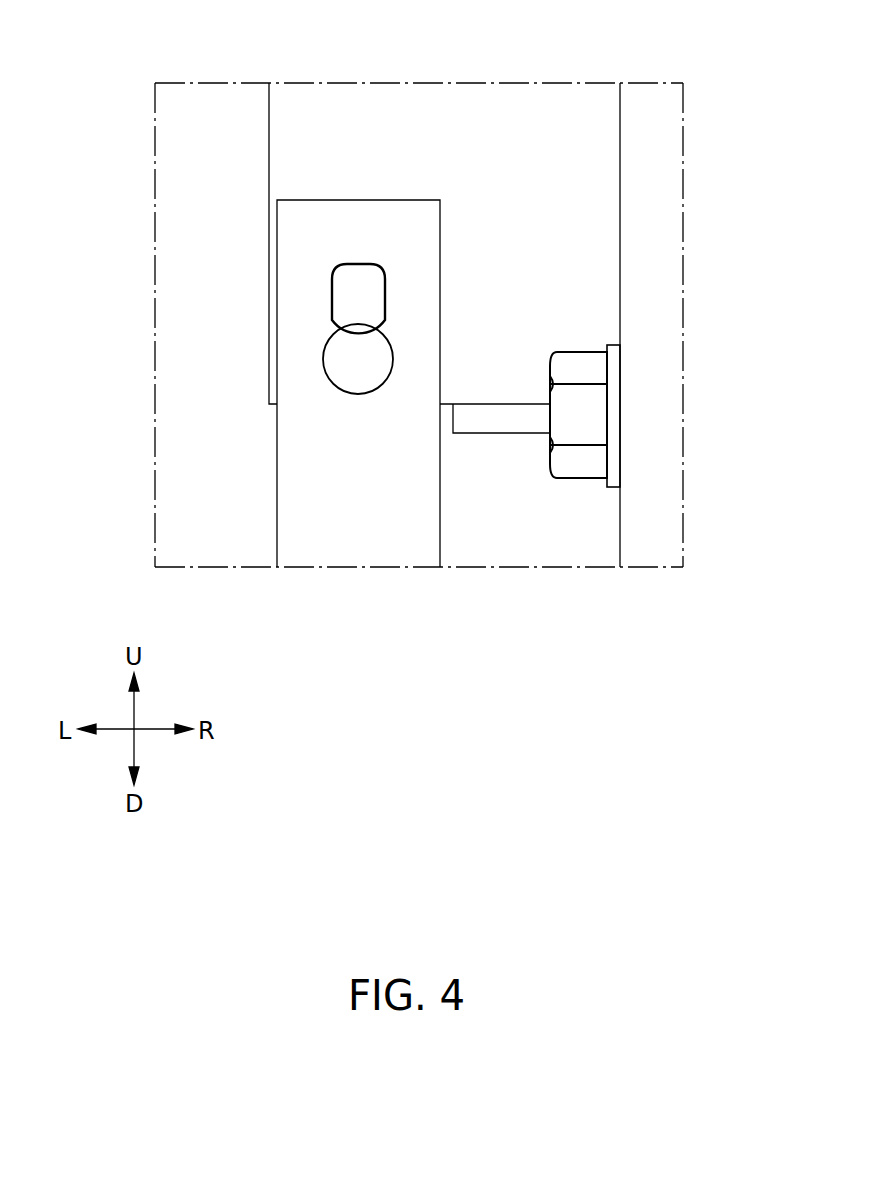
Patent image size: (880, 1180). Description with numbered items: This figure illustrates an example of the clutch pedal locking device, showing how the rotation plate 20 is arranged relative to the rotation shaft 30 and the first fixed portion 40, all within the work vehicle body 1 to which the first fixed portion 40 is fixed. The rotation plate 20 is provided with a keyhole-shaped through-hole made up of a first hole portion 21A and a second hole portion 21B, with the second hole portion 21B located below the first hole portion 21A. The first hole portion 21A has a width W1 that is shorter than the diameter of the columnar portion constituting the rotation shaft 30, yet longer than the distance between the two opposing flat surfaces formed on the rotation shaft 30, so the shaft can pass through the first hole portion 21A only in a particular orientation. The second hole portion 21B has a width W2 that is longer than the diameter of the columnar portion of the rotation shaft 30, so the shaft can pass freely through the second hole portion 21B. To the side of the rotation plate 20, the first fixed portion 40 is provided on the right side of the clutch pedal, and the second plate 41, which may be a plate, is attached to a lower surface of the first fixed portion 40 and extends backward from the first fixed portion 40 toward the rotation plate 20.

The work vehicle body 1 is at (652, 196).
The rotation plate 20 is at (322, 463).
The first hole portion 21A is at (318, 288).
The second hole portion 21B is at (326, 378).
The rotation shaft 30 is at (344, 282).
The first fixed portion 40 is at (525, 272).
The second plate 41 is at (497, 417).
The width of the first hole portion W1 is at (341, 299).
The width of the second hole portion W2 is at (332, 356).